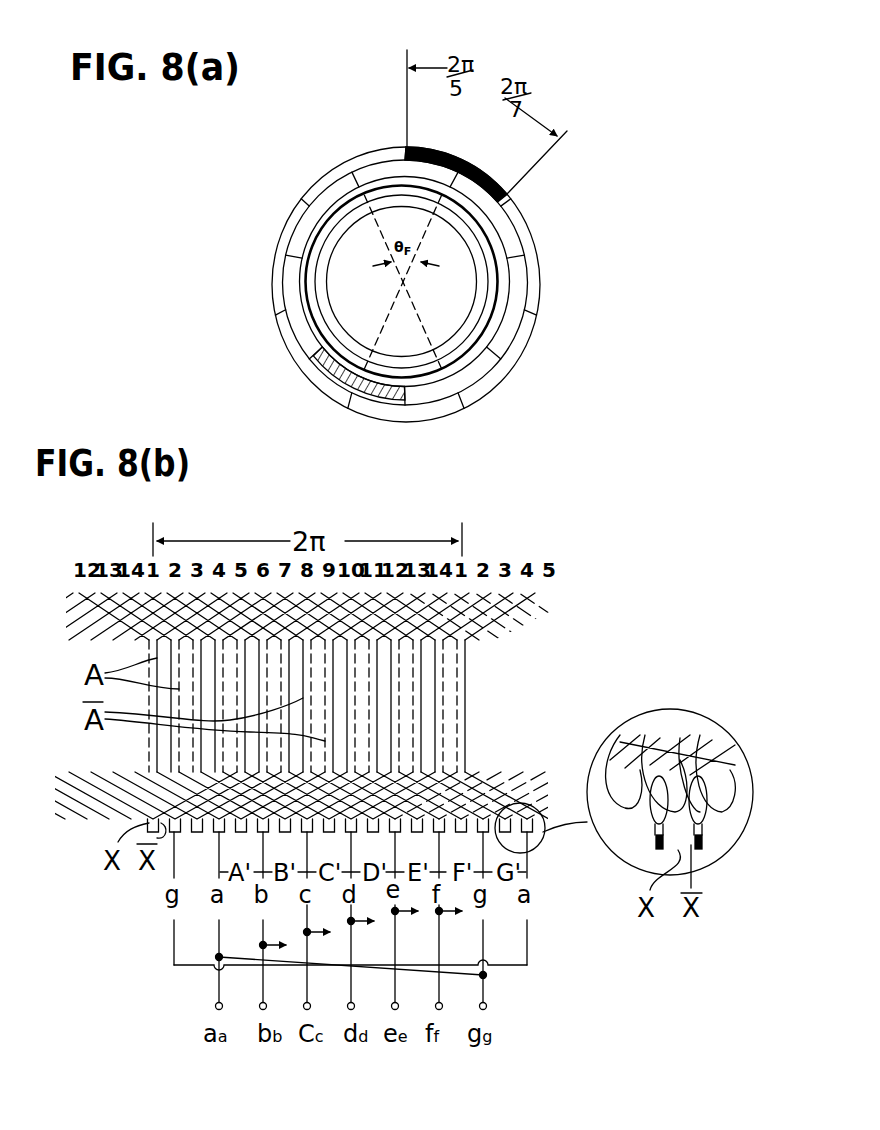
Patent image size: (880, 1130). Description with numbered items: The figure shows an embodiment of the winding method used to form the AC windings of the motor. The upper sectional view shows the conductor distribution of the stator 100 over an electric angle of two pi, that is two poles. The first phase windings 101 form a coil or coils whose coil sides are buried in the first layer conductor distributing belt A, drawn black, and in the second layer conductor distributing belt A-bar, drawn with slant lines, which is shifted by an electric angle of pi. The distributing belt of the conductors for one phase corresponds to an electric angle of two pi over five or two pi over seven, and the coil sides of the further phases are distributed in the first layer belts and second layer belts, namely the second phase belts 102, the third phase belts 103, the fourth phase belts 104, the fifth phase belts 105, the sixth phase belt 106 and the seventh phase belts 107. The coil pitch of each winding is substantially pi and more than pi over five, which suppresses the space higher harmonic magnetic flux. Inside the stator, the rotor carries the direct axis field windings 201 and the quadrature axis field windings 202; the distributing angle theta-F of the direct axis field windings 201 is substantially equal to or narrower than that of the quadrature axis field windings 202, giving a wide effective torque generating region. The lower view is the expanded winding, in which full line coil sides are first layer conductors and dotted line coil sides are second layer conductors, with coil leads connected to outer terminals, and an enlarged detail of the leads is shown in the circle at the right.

The stator 100 is at (523, 246).
The first phase windings 101 is at (450, 160).
The stator pole B (and B-bar) 102 is at (531, 292).
The stator pole C (and C-bar) 103 is at (509, 365).
The stator pole D (and D-bar) 104 is at (406, 418).
The stator pole E (and E-bar) 105 is at (501, 228).
The stator pole F 106 is at (278, 290).
The stator pole G (and G-bar) 107 is at (478, 432).
The direct axis field windings 201 is at (408, 193).
The quadrature axis field windings 202 is at (352, 300).